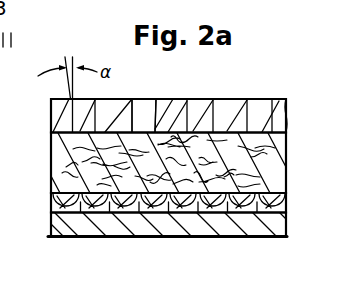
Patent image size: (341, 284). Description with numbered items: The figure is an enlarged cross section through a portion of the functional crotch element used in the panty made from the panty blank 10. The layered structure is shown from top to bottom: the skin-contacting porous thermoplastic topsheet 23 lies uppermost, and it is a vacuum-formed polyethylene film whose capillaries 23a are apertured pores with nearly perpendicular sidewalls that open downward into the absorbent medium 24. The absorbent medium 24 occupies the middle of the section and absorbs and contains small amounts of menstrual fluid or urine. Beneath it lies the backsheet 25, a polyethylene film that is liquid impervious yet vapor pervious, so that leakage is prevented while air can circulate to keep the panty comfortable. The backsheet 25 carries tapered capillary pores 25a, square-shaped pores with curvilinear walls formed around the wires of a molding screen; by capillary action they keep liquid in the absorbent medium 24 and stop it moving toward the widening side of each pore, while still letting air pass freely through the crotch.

The panty blank 10 is at (152, 237).
The topsheet 23 is at (236, 99).
The capillaries 23a is at (142, 123).
The absorbent medium 24 is at (281, 163).
The backsheet 25 is at (286, 203).
The tapered capillary pores 25a is at (57, 228).